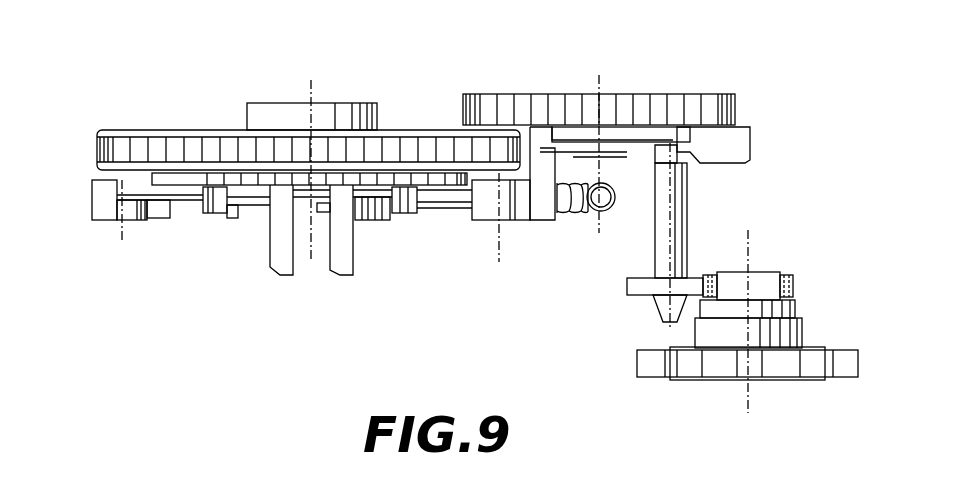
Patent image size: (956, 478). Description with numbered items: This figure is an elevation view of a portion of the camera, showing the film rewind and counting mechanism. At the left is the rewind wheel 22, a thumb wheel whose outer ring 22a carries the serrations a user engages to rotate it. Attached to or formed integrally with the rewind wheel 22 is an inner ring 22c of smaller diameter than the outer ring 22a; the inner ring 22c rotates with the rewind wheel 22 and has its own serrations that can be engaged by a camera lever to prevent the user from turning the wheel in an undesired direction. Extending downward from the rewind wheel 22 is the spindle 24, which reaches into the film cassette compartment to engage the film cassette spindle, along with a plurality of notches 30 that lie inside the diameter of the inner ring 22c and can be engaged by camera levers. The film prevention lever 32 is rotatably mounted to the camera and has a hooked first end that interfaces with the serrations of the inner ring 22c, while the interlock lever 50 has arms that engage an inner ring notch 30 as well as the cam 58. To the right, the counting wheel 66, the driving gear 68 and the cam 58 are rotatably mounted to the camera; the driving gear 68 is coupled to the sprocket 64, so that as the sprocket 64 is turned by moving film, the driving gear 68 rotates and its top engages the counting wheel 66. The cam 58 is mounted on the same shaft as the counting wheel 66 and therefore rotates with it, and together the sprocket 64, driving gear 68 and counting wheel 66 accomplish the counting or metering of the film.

The rewind wheel 22 is at (214, 122).
The outer ring 22a is at (152, 148).
The inner ring 22c is at (250, 177).
The spindle 24 is at (343, 260).
The notches 30 is at (210, 205).
The film prevention lever 32 is at (105, 207).
The interlock lever 50 is at (505, 222).
The cam 58 is at (620, 130).
The sprocket 64 is at (848, 358).
The counting wheel 66 is at (530, 107).
The driving gear 68 is at (685, 213).